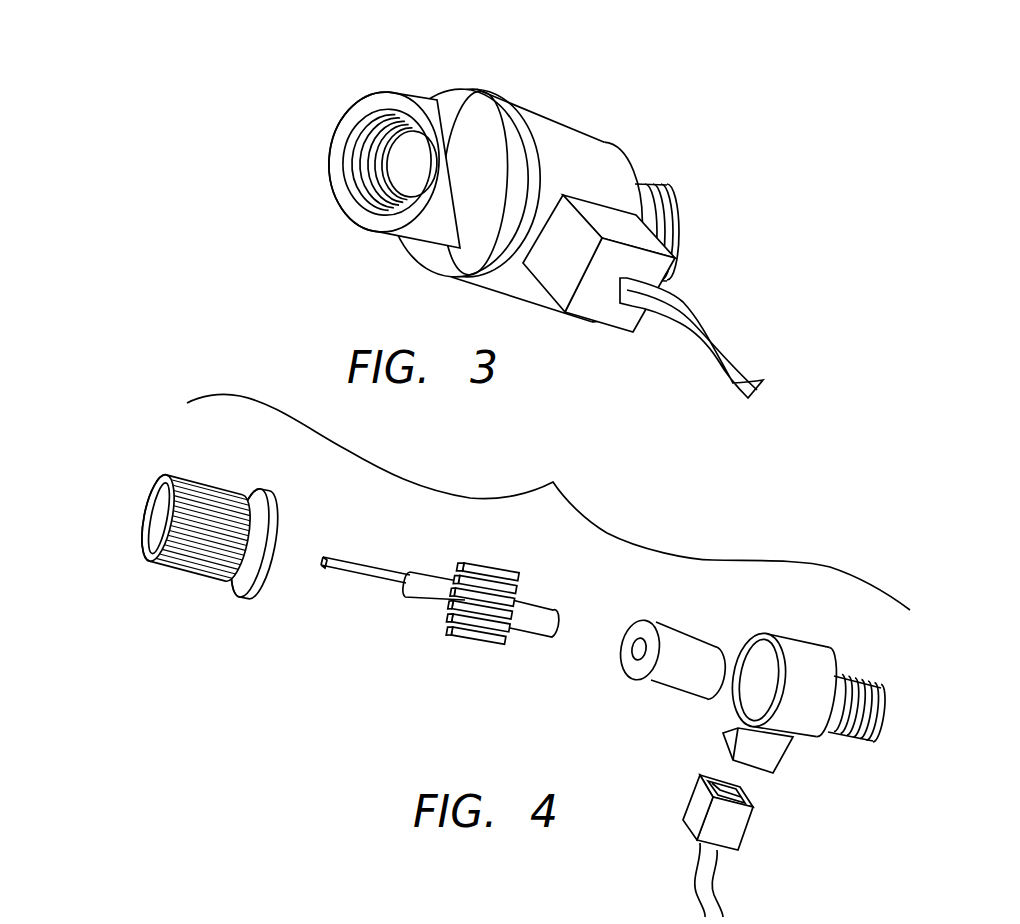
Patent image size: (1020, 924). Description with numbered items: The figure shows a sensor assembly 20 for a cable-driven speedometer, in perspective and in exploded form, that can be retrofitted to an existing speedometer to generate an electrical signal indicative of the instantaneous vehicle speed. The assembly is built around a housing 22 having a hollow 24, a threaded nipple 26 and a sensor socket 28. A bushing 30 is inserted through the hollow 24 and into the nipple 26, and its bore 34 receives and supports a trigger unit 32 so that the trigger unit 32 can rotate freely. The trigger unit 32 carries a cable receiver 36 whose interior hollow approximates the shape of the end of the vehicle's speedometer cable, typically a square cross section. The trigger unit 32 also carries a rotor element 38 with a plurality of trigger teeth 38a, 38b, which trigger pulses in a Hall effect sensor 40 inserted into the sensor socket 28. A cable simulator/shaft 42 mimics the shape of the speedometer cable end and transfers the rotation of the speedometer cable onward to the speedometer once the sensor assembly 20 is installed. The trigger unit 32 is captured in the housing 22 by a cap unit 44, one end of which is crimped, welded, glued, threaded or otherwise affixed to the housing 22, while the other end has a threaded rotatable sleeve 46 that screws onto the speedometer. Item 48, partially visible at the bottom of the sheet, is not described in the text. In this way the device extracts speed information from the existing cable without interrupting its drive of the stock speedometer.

In FIG. 3, the sensor assembly 20 is at (543, 204).
In FIG. 4, the sensor assembly 20 is at (548, 502).
In FIG. 3, the housing 22 is at (582, 108).
In FIG. 4, the housing 22 is at (811, 692).
In FIG. 3, the hollow 24 is at (397, 168).
In FIG. 4, the hollow 24 is at (760, 660).
In FIG. 3, the threaded nipple 26 is at (655, 173).
In FIG. 4, the threaded nipple 26 is at (843, 742).
In FIG. 3, the sensor socket 28 is at (543, 267).
In FIG. 4, the sensor socket 28 is at (787, 760).
In FIG. 4, the bushing 30 is at (654, 636).
In FIG. 4, the trigger unit 32 is at (440, 594).
In FIG. 4, the bore 34 is at (623, 647).
In FIG. 4, the cable receiver 36 is at (520, 600).
In FIG. 4, the rotor element 38 is at (506, 607).
In FIG. 4, the trigger tooth 38a is at (452, 625).
In FIG. 4, the trigger tooth 38b is at (507, 630).
In FIG. 4, the Hall effect sensor 40 is at (753, 832).
In FIG. 4, the cable simulator/shaft 42 is at (363, 557).
In FIG. 4, the cap unit 44 is at (200, 541).
In FIG. 4, the threaded rotatable sleeve 46 is at (190, 480).
In FIG. 4, the cable 48 is at (400, 920).